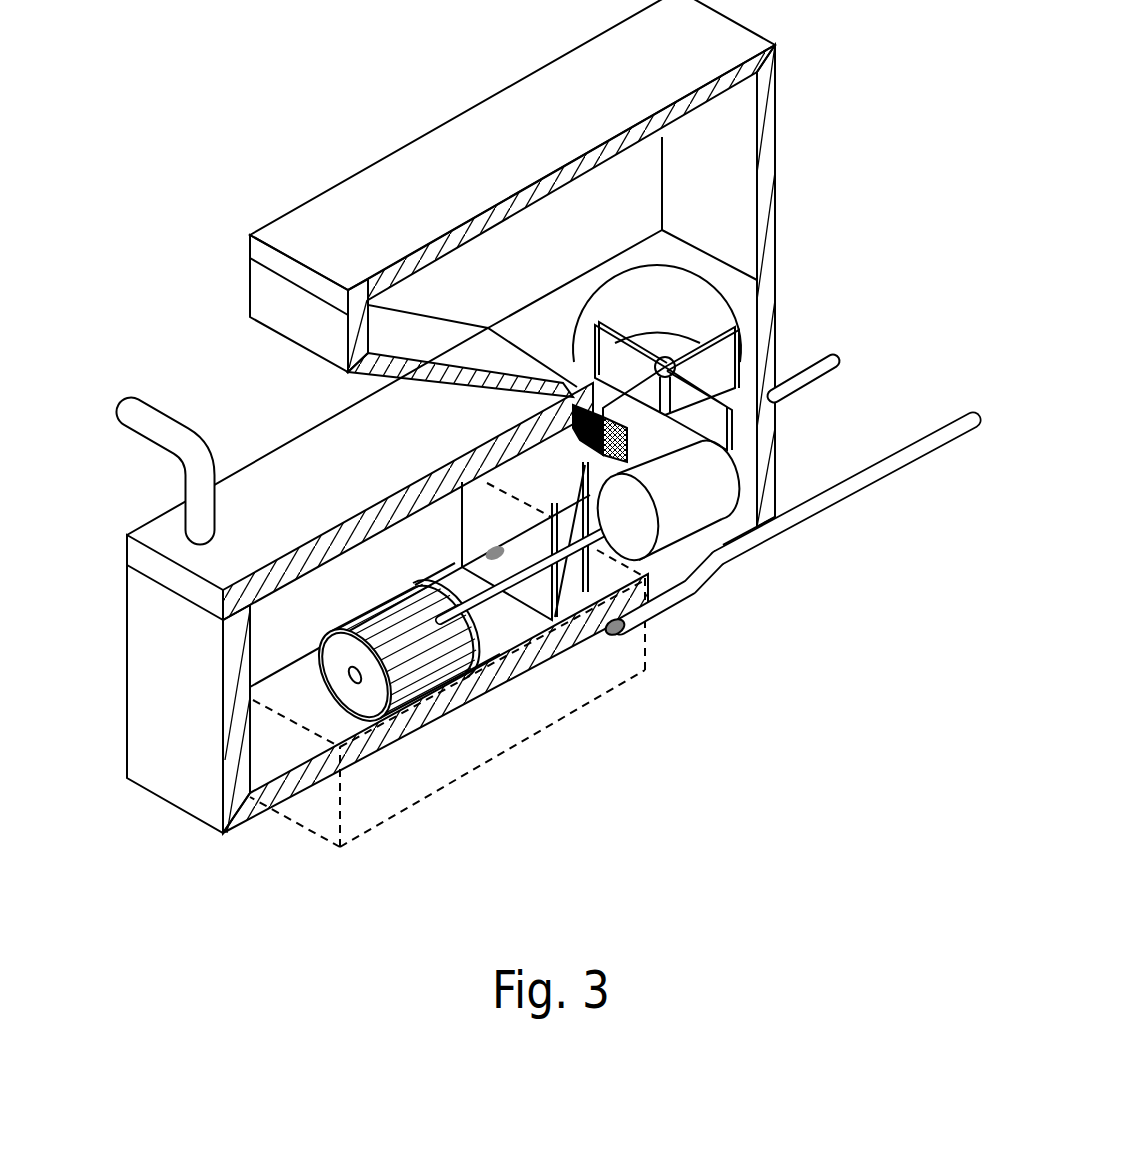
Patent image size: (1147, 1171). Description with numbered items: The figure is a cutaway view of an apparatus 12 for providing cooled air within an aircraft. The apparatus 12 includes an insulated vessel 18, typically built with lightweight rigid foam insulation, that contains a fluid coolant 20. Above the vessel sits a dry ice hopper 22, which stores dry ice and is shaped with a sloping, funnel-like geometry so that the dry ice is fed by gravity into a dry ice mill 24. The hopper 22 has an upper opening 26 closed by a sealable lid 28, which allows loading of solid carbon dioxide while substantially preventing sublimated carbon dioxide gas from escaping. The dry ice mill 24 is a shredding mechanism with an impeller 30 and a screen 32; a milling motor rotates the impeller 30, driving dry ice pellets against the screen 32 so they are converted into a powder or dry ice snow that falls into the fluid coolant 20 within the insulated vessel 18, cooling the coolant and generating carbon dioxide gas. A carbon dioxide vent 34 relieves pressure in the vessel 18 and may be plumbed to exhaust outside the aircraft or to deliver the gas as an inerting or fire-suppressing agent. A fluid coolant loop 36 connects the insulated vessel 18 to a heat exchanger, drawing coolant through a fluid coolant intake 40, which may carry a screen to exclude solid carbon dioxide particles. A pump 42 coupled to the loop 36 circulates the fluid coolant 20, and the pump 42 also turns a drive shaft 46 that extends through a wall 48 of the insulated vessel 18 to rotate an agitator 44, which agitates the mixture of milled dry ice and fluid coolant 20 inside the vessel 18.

The apparatus 12 is at (346, 68).
The insulated vessel 18 is at (127, 715).
The fluid coolant 20 is at (450, 790).
The dry ice hopper 22 is at (778, 125).
The dry ice mill 24 is at (645, 280).
The upper opening 26 is at (482, 86).
The sealable lid 28 is at (305, 225).
The impeller 30 is at (737, 427).
The screen 32 is at (520, 428).
The carbon dioxide vent 34 is at (140, 405).
The fluid coolant loop 36 is at (835, 355).
The fluid coolant intake 40 is at (637, 632).
The pump 42 is at (723, 497).
The agitator 44 is at (333, 672).
The drive shaft 46 is at (463, 598).
The wall 48 is at (502, 640).